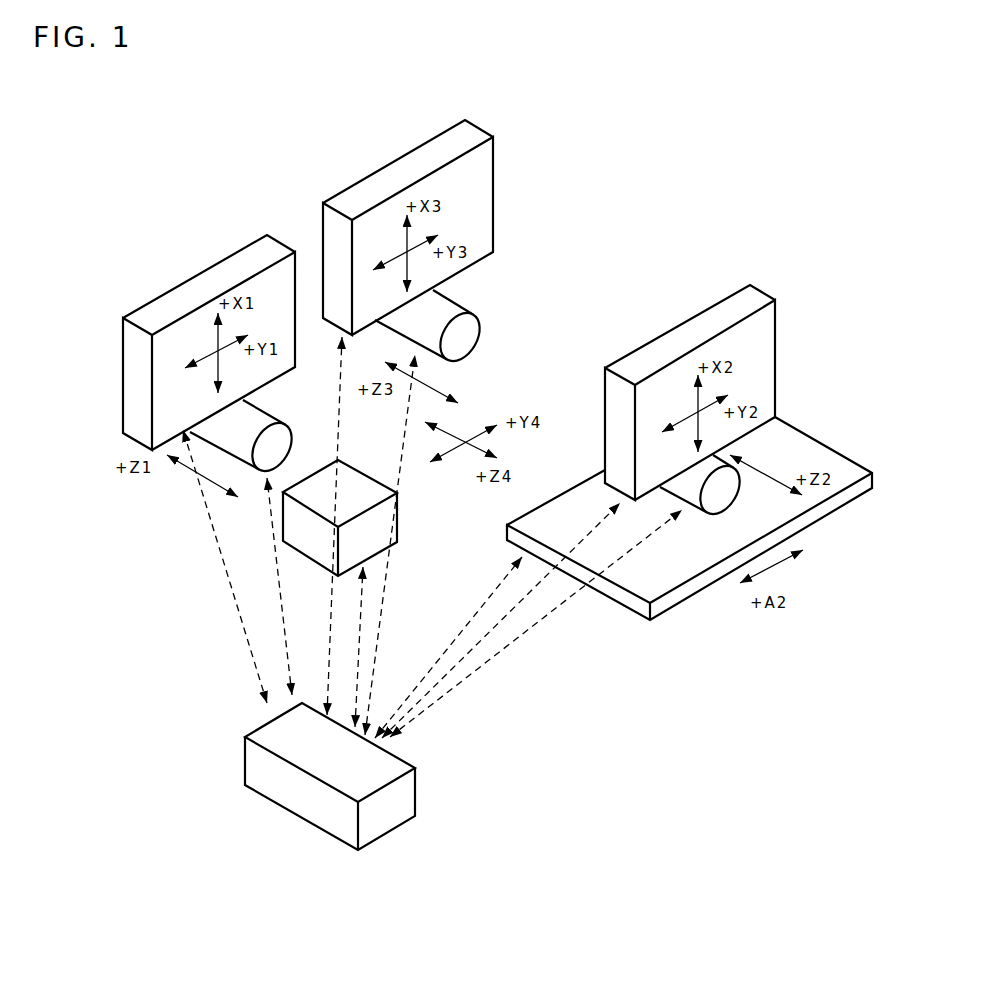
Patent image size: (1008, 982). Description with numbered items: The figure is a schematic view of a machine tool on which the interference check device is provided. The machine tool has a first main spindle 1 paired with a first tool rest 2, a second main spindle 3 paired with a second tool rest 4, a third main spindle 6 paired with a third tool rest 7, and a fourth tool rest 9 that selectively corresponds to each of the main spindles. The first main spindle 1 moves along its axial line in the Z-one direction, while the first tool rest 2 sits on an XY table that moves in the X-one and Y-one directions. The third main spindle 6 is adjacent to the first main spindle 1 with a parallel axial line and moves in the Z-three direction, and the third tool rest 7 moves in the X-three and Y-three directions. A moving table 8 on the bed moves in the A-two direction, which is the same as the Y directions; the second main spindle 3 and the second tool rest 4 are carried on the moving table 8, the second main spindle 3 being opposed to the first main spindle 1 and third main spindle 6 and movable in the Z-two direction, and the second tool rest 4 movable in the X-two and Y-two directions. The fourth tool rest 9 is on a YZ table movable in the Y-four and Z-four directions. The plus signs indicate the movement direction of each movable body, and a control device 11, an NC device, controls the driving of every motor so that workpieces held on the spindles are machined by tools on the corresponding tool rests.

The first main spindle 1 is at (252, 420).
The first tool rest 2 is at (180, 295).
The second main spindle 3 is at (720, 505).
The second tool rest 4 is at (745, 297).
The third main spindle 6 is at (452, 307).
The third tool rest 7 is at (492, 187).
The moving table 8 is at (643, 613).
The fourth tool rest 9 is at (357, 480).
The control device 11 is at (387, 768).